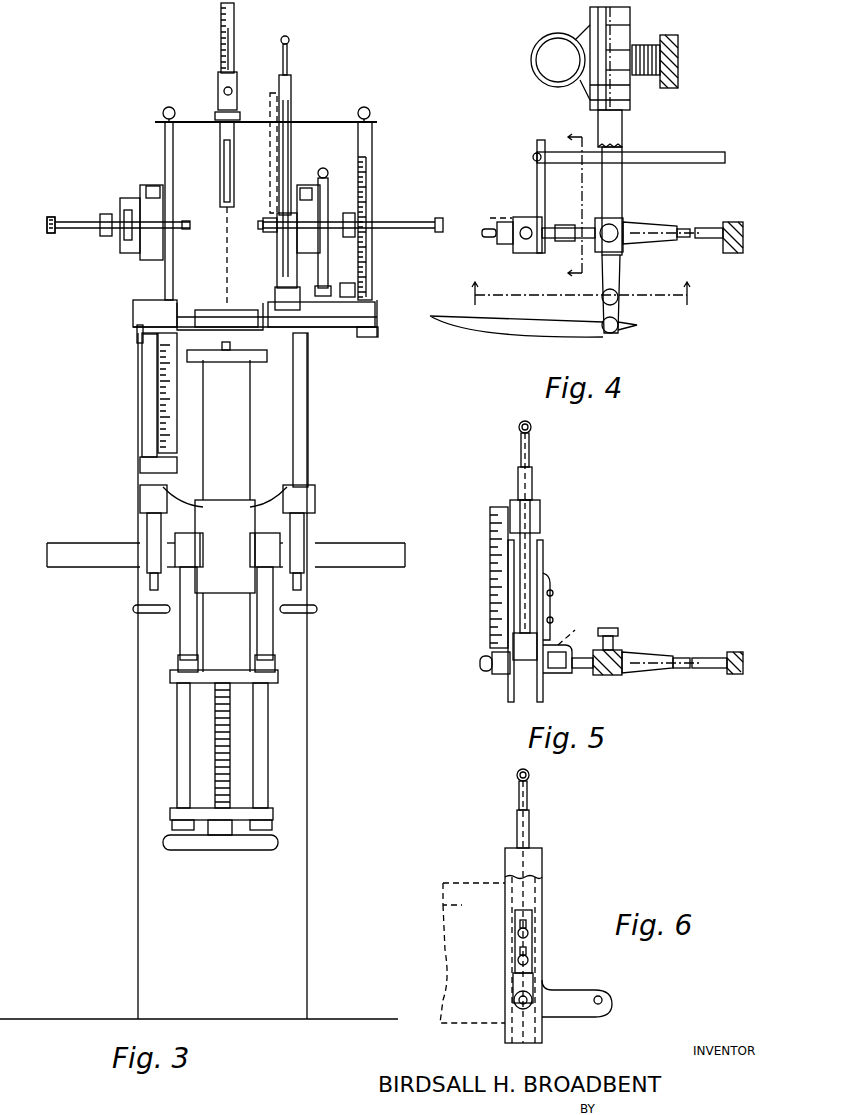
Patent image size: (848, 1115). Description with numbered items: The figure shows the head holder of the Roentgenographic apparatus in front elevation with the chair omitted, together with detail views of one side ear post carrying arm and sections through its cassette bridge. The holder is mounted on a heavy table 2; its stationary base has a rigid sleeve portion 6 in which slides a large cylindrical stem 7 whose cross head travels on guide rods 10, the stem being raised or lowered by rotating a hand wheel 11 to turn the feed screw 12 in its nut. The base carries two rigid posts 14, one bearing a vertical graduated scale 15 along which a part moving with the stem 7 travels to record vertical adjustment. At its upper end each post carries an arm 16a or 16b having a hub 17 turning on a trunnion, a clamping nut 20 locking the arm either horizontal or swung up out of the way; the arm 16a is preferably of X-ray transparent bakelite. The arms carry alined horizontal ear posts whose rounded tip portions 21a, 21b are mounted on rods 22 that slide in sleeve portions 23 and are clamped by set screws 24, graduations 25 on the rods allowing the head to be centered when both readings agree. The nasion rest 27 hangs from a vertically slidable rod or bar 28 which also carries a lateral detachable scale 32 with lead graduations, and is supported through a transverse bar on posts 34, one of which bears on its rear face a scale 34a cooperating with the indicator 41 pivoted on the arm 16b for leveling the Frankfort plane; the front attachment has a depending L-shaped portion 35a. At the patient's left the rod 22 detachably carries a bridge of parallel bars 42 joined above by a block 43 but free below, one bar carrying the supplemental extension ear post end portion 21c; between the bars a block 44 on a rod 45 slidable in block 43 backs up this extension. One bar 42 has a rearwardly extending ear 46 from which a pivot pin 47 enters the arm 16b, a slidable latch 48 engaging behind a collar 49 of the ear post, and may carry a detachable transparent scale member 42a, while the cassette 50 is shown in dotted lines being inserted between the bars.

In FIG. 3, the table 2 is at (296, 704).
In FIG. 3, the rigid sleeve portion 6 is at (235, 520).
In FIG. 3, the cylindrical stem 7 is at (218, 632).
In FIG. 3, the guide rods 10 is at (182, 785).
In FIG. 3, the hand wheel 11 is at (181, 842).
In FIG. 3, the feed screw 12 is at (215, 752).
In FIG. 3, the rigid posts 14 is at (150, 406).
In FIG. 3, the vertical graduated scale 15 is at (178, 420).
In FIG. 3, the arm 16a is at (124, 250).
In FIG. 4, the arm 16b is at (622, 200).
In FIG. 4, the hub 17 is at (620, 32).
In FIG. 4, the clamping nut 20 is at (680, 45).
In FIG. 3, the tip portion 21a is at (190, 222).
In FIG. 5, the tip portion 21b is at (576, 630).
In FIG. 5, the supplemental extension ear post end portion 21c is at (486, 672).
In FIG. 3, the rods 22 is at (88, 220).
In FIG. 5, the sleeve portions 23 is at (650, 660).
In FIG. 5, the set screws 24 is at (618, 632).
In FIG. 3, the graduations 25 is at (52, 218).
In FIG. 3, the nasion rest 27 is at (232, 190).
In FIG. 3, the rod or bar 28 is at (219, 44).
In FIG. 3, the detachable scale 32 is at (225, 257).
In FIG. 3, the posts 34 is at (374, 200).
In FIG. 3, the scale 34a is at (374, 152).
In FIG. 3, the depending L-shaped portion 35a is at (378, 337).
In FIG. 4, the indicator 41 is at (480, 335).
In FIG. 5, the parallel bars 42 is at (540, 553).
In FIG. 5, the detachable transparent scale member 42a is at (492, 544).
In FIG. 5, the block 43 is at (528, 512).
In FIG. 5, the block 44 is at (525, 650).
In FIG. 5, the rod 45 is at (530, 578).
In FIG. 6, the ear 46 is at (565, 997).
In FIG. 4, the pivot pin 47 is at (695, 152).
In FIG. 5, the slidable latch 48 is at (550, 605).
In FIG. 5, the collar 49 is at (566, 675).
In FIG. 6, the cassette 50 is at (443, 915).